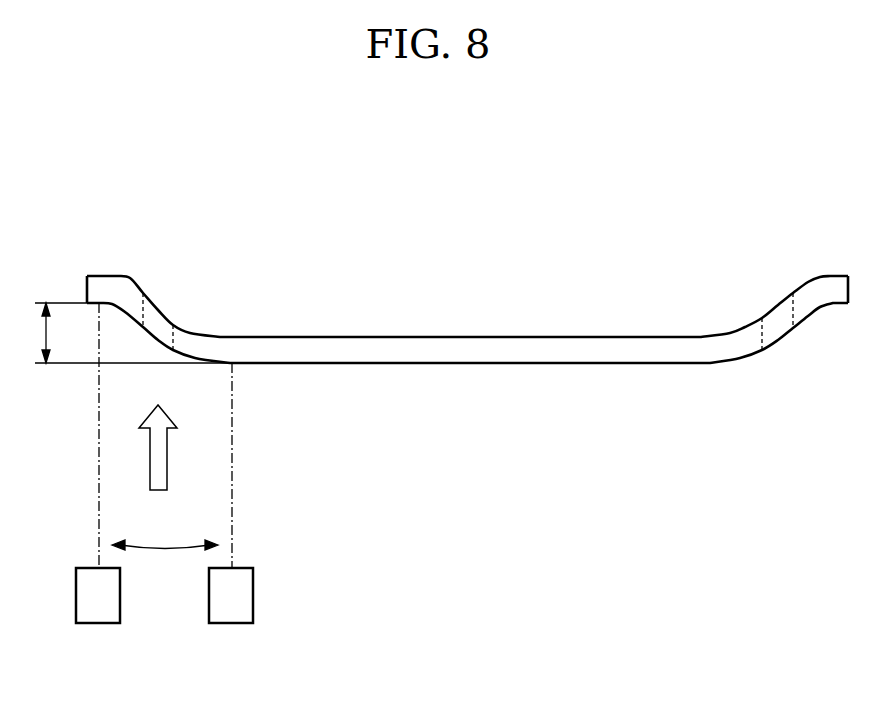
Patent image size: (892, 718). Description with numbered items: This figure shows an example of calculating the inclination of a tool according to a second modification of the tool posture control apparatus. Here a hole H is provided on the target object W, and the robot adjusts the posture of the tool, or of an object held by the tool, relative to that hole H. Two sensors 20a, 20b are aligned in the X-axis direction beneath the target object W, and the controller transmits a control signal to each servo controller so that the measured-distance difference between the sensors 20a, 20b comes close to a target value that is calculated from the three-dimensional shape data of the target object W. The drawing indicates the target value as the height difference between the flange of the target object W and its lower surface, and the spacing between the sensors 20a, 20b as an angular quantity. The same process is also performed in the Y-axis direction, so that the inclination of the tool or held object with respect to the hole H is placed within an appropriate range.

The target object W is at (476, 337).
The hole H is at (166, 330).
The sensor 20a is at (93, 623).
The sensor 20b is at (231, 623).